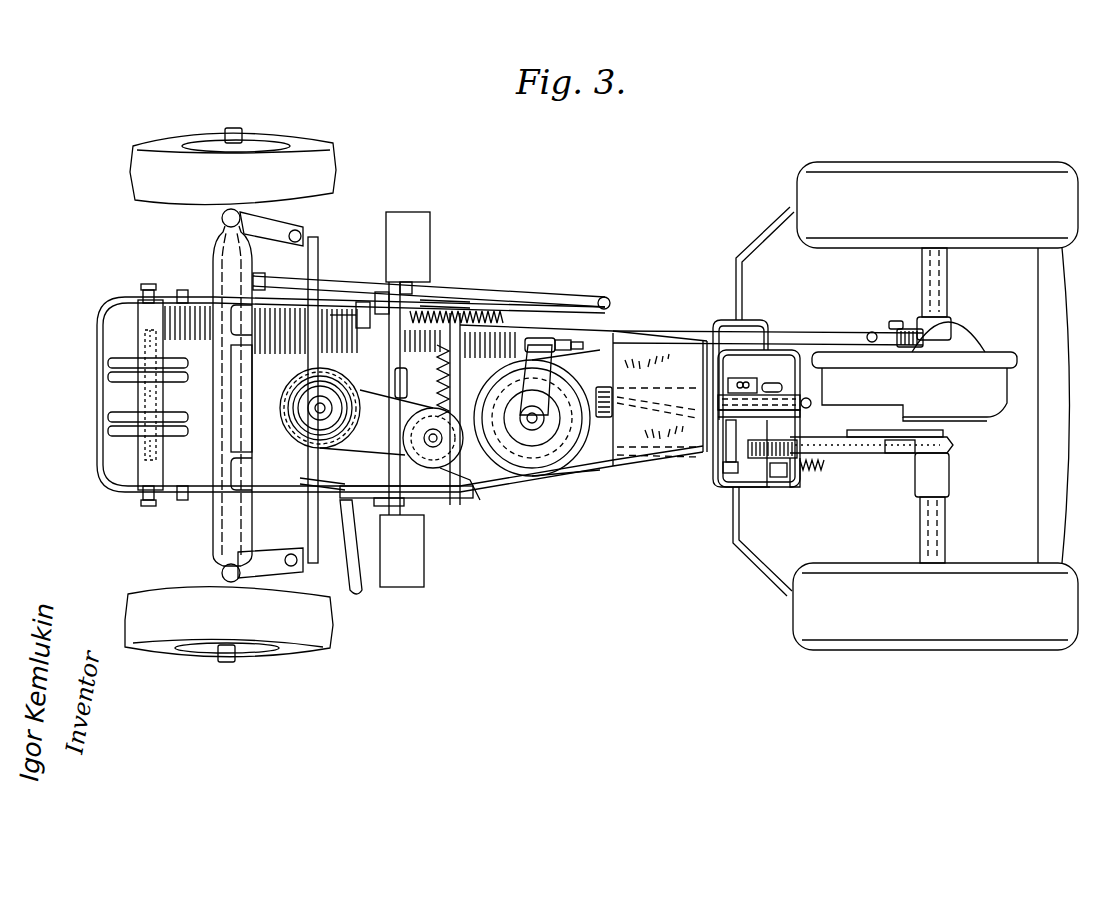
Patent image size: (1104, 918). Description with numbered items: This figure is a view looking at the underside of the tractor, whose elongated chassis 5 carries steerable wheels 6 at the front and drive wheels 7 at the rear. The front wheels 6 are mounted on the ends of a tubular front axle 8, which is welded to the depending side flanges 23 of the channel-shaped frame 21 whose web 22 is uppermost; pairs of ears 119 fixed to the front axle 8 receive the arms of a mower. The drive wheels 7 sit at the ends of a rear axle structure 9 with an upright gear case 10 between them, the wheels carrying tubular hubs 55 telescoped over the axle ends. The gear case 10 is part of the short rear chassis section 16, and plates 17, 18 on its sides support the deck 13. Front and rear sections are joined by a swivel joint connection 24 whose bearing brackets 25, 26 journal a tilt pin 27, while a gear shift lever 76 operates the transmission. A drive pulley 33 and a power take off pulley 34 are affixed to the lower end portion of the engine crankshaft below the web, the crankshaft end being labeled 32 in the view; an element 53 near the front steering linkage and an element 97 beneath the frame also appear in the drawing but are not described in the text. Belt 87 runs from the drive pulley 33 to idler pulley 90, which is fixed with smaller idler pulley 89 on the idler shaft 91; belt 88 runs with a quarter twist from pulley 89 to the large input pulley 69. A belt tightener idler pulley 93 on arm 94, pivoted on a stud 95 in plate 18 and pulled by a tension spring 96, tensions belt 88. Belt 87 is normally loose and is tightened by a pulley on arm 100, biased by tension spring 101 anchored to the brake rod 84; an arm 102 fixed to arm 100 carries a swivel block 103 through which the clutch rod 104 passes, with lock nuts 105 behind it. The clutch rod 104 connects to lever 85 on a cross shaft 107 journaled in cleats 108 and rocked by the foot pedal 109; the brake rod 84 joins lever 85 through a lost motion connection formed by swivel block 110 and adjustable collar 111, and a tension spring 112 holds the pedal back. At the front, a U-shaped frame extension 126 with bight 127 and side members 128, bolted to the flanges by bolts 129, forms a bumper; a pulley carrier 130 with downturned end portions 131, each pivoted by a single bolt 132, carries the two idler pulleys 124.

The chassis 5 is at (646, 271).
The steerable wheels 6 is at (168, 140).
The drive wheels 7 is at (918, 164).
The front axle 8 is at (213, 538).
The rear axle structure 9 is at (950, 450).
The gear case 10 is at (960, 337).
The deck 13 is at (1028, 482).
The rear chassis section 16 is at (752, 528).
The plate 17 is at (817, 331).
The plate 18 is at (846, 437).
The frame 21 is at (479, 500).
The web 22 is at (618, 332).
The side flanges 23 is at (280, 300).
The swivel joint connection 24 is at (776, 372).
The bearing bracket 25 is at (633, 466).
The bearing bracket 26 is at (752, 348).
The tilt pin 27 is at (800, 398).
The pulley shaft 32 is at (315, 408).
The drive pulley 33 is at (290, 396).
The power take off pulley 34 is at (292, 422).
The tie rod 53 is at (326, 210).
The tubular hubs 55 is at (924, 263).
The input pulley 69 is at (893, 455).
The gear shift lever 76 is at (760, 378).
The brake rod 84 is at (681, 330).
The lever 85 is at (395, 385).
The belt 87 is at (405, 446).
The belt 88 is at (602, 470).
The idler pulley 89 is at (536, 470).
The idler pulley 90 is at (556, 384).
The idler shaft 91 is at (560, 452).
The belt tightener idler pulley 93 is at (788, 478).
The arm 94 is at (738, 472).
The stud 95 is at (722, 488).
The tension spring 96 is at (816, 472).
The steering column support 97 is at (420, 470).
The arm 100 is at (478, 482).
The tension spring 101 is at (437, 382).
The arm 102 is at (540, 350).
The swivel block 103 is at (562, 340).
The clutch rod 104 is at (514, 343).
The lock nuts 105 is at (576, 342).
The cross shaft 107 is at (392, 290).
The cleats 108 is at (342, 483).
The foot pedal 109 is at (357, 596).
The swivel block 110 is at (428, 298).
The adjustable collar 111 is at (358, 300).
The tension spring 112 is at (490, 309).
The ears 119 is at (252, 352).
The idler pulleys 124 is at (108, 425).
The frame extension 126 is at (89, 448).
The bight 127 is at (97, 350).
The side members 128 is at (152, 290).
The bolts 129 is at (185, 290).
The pulley carrier 130 is at (140, 327).
The end portions 131 is at (163, 396).
The bolt 132 is at (148, 290).